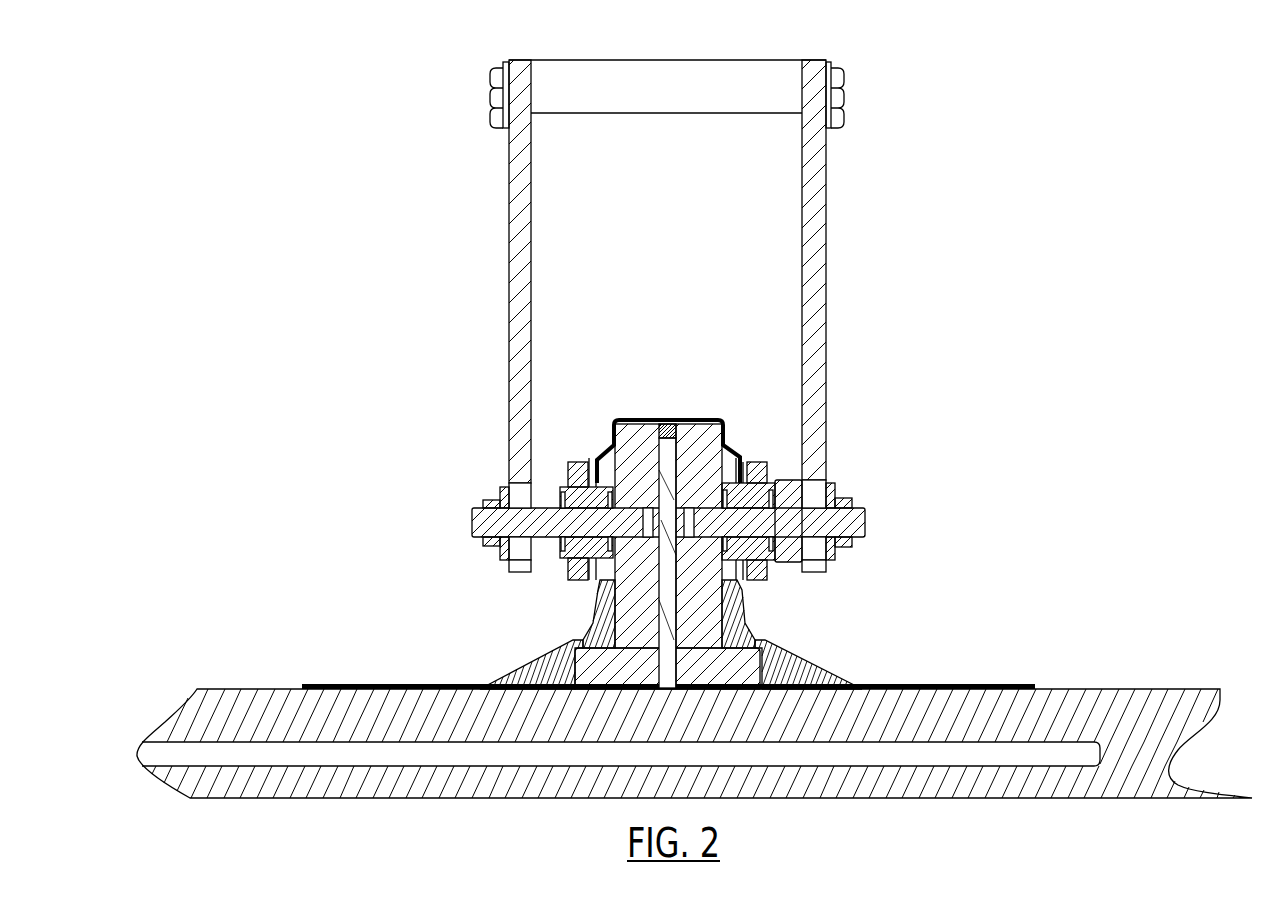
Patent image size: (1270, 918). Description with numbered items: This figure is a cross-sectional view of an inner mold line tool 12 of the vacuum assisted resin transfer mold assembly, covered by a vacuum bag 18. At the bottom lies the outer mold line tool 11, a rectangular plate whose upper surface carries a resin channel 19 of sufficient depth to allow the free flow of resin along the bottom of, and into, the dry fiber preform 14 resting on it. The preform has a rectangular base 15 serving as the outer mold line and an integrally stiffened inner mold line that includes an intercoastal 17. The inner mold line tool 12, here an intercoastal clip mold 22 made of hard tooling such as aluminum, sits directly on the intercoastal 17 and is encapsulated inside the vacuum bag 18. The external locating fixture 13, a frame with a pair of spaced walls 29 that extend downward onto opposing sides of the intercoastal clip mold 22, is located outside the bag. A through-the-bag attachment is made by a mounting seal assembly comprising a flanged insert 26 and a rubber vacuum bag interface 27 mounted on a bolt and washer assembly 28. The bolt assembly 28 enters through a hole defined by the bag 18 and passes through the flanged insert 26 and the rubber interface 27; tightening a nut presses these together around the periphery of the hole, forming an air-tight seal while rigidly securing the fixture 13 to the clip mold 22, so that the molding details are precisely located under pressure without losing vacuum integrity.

The outer mold line tool 11 is at (932, 800).
The inner mold line tool 12 is at (681, 419).
The external locating fixture 13 is at (877, 96).
The dry fiber preform 14 is at (533, 722).
The rectangular base 15 is at (1092, 702).
The intercoastal 17 is at (725, 444).
The vacuum bag 18 is at (527, 660).
The resin channel 19 is at (757, 753).
The intercoastal clip mold 22 is at (707, 583).
The flanged insert 26 is at (566, 462).
The rubber vacuum bag interface 27 is at (591, 458).
The bolt and washer assembly 28 is at (867, 522).
The spaced walls 29 is at (519, 274).